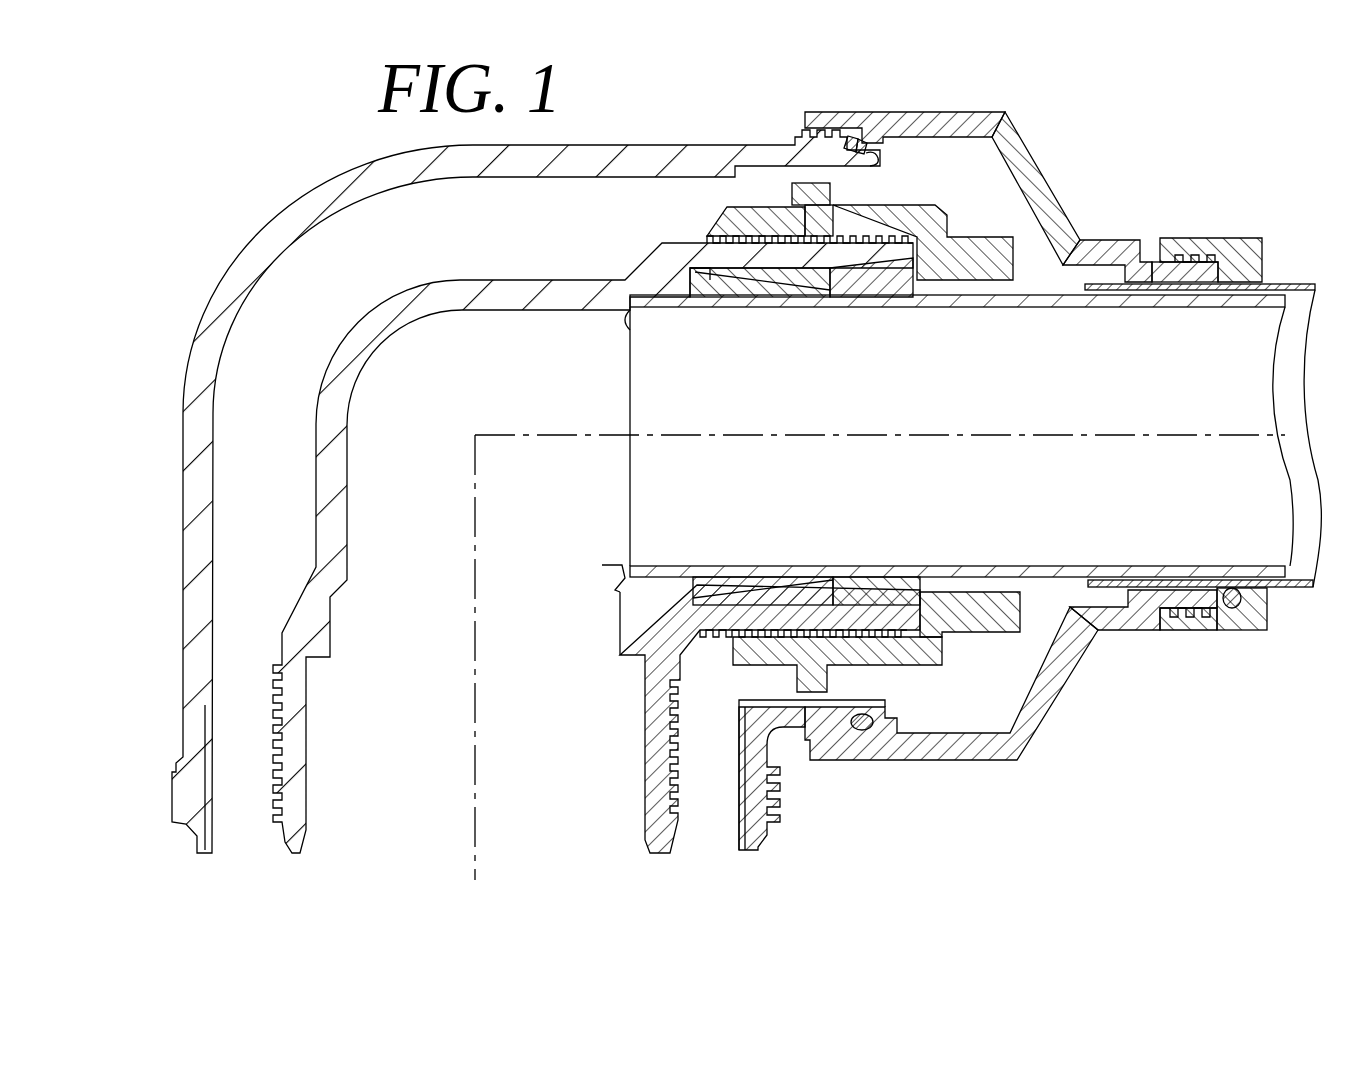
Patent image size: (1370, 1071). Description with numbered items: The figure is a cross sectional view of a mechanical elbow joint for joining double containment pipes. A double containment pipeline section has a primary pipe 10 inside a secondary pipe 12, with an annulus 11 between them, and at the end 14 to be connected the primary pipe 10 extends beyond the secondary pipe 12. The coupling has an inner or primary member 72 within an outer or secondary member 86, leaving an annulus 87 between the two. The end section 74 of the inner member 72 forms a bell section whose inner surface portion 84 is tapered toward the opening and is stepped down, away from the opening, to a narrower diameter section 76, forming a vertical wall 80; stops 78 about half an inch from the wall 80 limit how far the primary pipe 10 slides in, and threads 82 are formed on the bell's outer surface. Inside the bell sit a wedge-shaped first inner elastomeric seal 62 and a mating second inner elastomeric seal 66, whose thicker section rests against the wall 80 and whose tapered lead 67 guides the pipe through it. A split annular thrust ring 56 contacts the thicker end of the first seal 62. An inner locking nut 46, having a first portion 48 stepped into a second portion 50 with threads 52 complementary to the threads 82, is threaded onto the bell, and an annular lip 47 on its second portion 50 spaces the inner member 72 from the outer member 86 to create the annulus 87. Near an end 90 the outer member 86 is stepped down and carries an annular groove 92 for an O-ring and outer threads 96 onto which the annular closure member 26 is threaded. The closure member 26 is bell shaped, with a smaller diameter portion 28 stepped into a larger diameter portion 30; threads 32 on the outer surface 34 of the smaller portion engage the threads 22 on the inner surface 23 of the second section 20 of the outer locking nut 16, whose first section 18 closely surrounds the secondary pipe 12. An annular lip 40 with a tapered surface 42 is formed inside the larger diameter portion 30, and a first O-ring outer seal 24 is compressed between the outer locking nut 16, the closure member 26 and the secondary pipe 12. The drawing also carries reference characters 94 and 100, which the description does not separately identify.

The primary pipeline section 10 is at (860, 300).
The annulus 11 is at (1150, 307).
The secondary pipeline section 12 is at (1275, 285).
The end of the double containment pipe 14 is at (608, 400).
The outer locking nut 16 is at (1291, 608).
The first section 18 is at (1265, 622).
The second section 20 is at (1192, 625).
The threads 22 is at (1162, 608).
The inner surface 23 is at (1212, 590).
The first O-ring outer seal 24 is at (1225, 608).
The annular closure member 26 is at (1066, 721).
The smaller diameter portion 28 is at (1156, 265).
The larger diameter portion 30 is at (955, 118).
The threads 32 is at (1196, 256).
The outer surface 34 is at (800, 132).
The annular lip 40 is at (895, 146).
The tapered surface 42 is at (925, 255).
The inner locking nut 46 is at (989, 219).
The annular lip 47 is at (800, 190).
The first portion 48 is at (992, 264).
The second portion 50 is at (757, 223).
The threads 52 is at (820, 225).
The split annular thrust ring 56 is at (930, 592).
The first annular inner elastomeric seal 62 is at (720, 272).
The second annular inner elastomeric seal 66 is at (692, 300).
The tapered lead 67 is at (822, 577).
The inner member 72 is at (528, 260).
The end section 74 is at (852, 640).
The narrower diameter section 76 is at (652, 576).
The stops 78 is at (625, 312).
The vertical wall 80 is at (625, 600).
The threads 82 is at (840, 576).
The inner surface portion 84 is at (846, 577).
The outer member 86 is at (250, 206).
The annulus 87 is at (280, 487).
The end 90 is at (885, 160).
The annular groove 92 is at (797, 148).
The seal 94 is at (852, 135).
The outer threads 96 is at (815, 130).
The O-ring 100 is at (1234, 590).